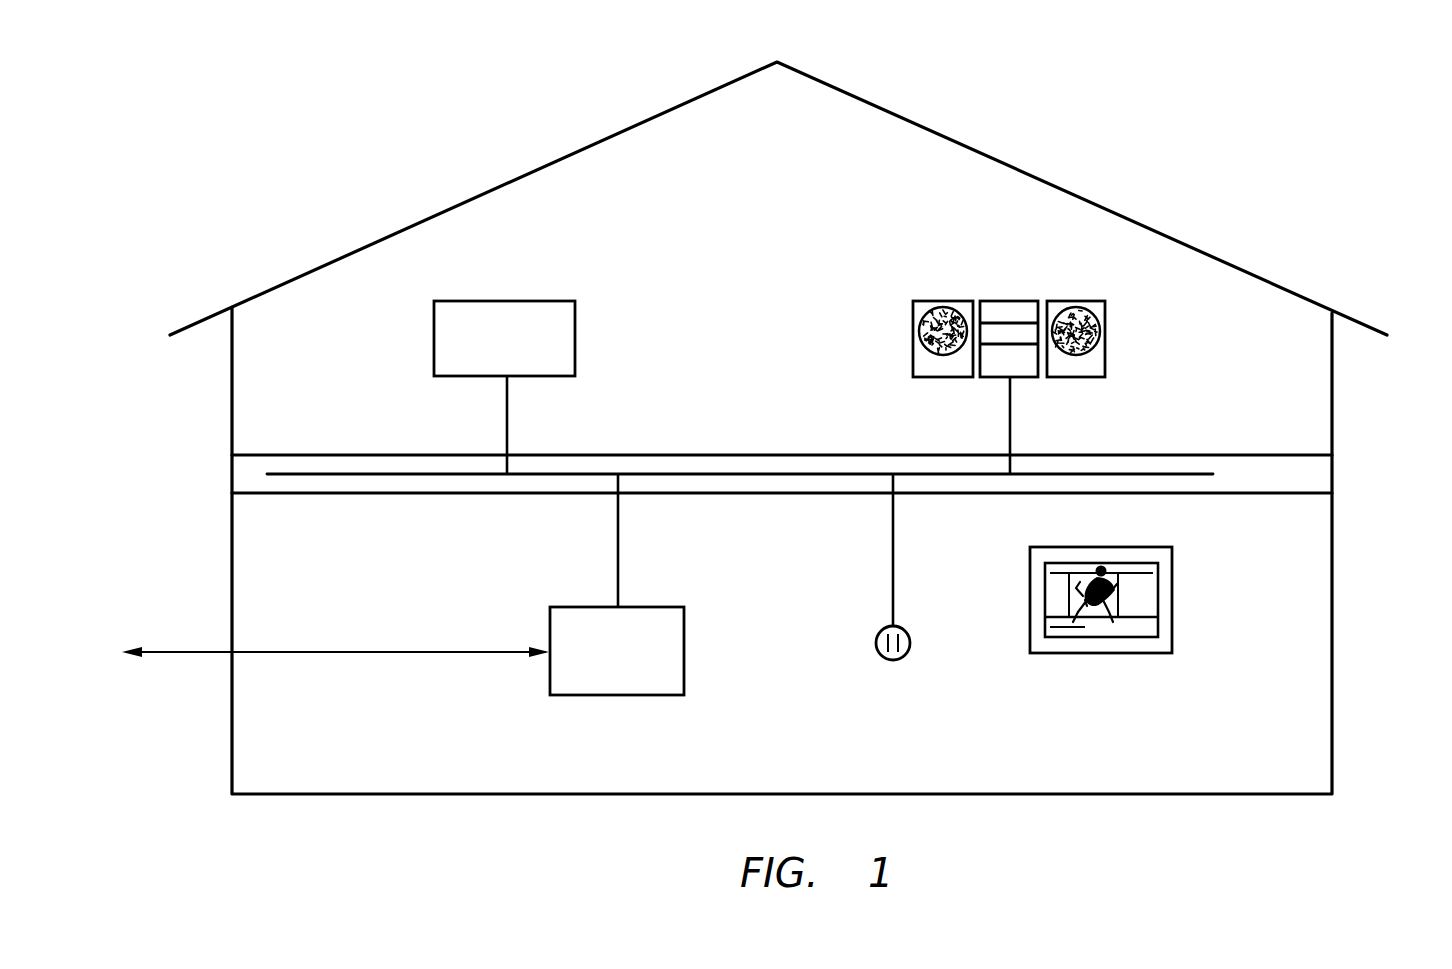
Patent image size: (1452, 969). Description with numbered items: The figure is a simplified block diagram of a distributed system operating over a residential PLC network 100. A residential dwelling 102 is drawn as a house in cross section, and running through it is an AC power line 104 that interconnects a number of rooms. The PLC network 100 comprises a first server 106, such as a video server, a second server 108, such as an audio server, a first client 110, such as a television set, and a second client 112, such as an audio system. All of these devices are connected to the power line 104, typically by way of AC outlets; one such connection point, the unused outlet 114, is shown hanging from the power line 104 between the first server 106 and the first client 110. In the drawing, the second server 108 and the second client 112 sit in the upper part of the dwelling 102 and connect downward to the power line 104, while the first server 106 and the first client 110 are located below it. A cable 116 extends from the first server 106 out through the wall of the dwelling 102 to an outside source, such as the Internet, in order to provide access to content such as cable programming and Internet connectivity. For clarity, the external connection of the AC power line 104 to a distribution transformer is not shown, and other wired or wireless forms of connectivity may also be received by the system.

The residential PLC network 100 is at (440, 168).
The residential dwelling 102 is at (1313, 535).
The AC power line 104 is at (584, 474).
The first server 106 is at (685, 641).
The second server 108 is at (567, 328).
The first client 110 is at (1175, 593).
The second client 112 is at (1007, 312).
The unused outlet 114 is at (905, 628).
The cable 116 is at (370, 652).